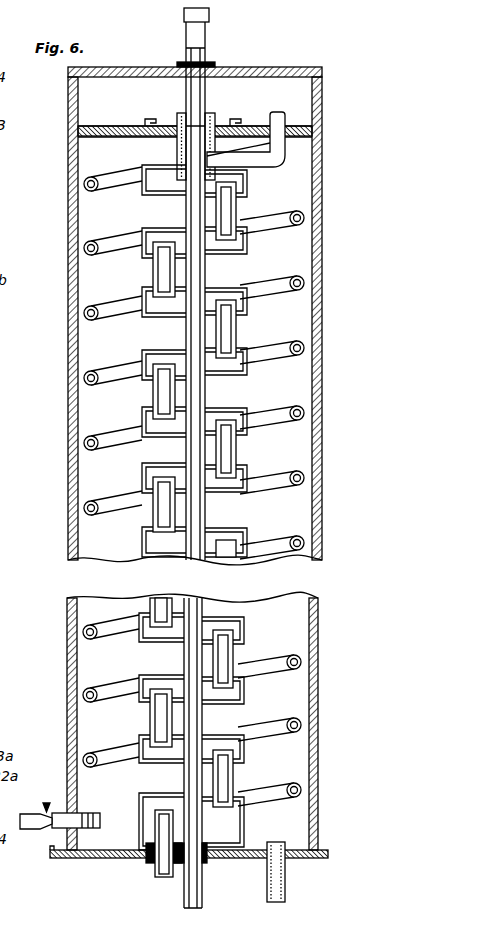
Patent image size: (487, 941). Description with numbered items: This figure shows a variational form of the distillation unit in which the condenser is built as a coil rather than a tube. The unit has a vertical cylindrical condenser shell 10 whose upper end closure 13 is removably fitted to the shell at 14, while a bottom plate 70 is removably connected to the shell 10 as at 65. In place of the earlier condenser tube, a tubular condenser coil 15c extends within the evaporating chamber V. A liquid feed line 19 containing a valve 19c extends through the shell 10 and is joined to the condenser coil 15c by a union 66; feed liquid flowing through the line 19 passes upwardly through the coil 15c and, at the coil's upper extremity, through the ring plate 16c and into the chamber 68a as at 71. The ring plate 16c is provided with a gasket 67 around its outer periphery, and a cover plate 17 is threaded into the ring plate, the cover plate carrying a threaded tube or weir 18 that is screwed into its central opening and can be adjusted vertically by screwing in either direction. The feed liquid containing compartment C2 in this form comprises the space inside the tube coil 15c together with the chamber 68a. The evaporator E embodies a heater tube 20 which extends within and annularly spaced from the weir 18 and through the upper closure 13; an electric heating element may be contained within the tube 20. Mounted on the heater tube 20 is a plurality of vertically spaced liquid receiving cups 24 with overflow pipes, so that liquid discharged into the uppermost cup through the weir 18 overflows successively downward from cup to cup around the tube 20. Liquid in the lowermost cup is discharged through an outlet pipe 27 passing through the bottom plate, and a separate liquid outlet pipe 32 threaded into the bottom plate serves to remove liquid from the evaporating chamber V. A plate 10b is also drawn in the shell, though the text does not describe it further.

The condenser shell 10 is at (320, 464).
The partition plate 10b is at (313, 131).
The upper end closure 13 is at (266, 69).
The removable fit of upper end closure 14 is at (322, 73).
The tubular condenser coil 15c is at (276, 283).
The ring plate 16c is at (110, 127).
The cover plate 17 is at (157, 137).
The weir 18 is at (213, 122).
The liquid feed line 19 is at (64, 812).
The valve 19c is at (46, 830).
The heater tube 20 is at (206, 517).
The liquid receiving cups 24 is at (142, 414).
The outlet pipe 27 is at (151, 866).
The liquid outlet pipe 32 is at (288, 877).
The removable connection of bottom plate 65 is at (53, 858).
The union 66 is at (86, 813).
The gasket 67 is at (71, 140).
The chamber 68a is at (220, 93).
The bottom plate 70 is at (103, 859).
The upper extremity of condenser coil 71 is at (286, 126).
The feed liquid containing compartment C2 is at (160, 100).
The evaporator E is at (137, 638).
The evaporating chamber V is at (280, 384).